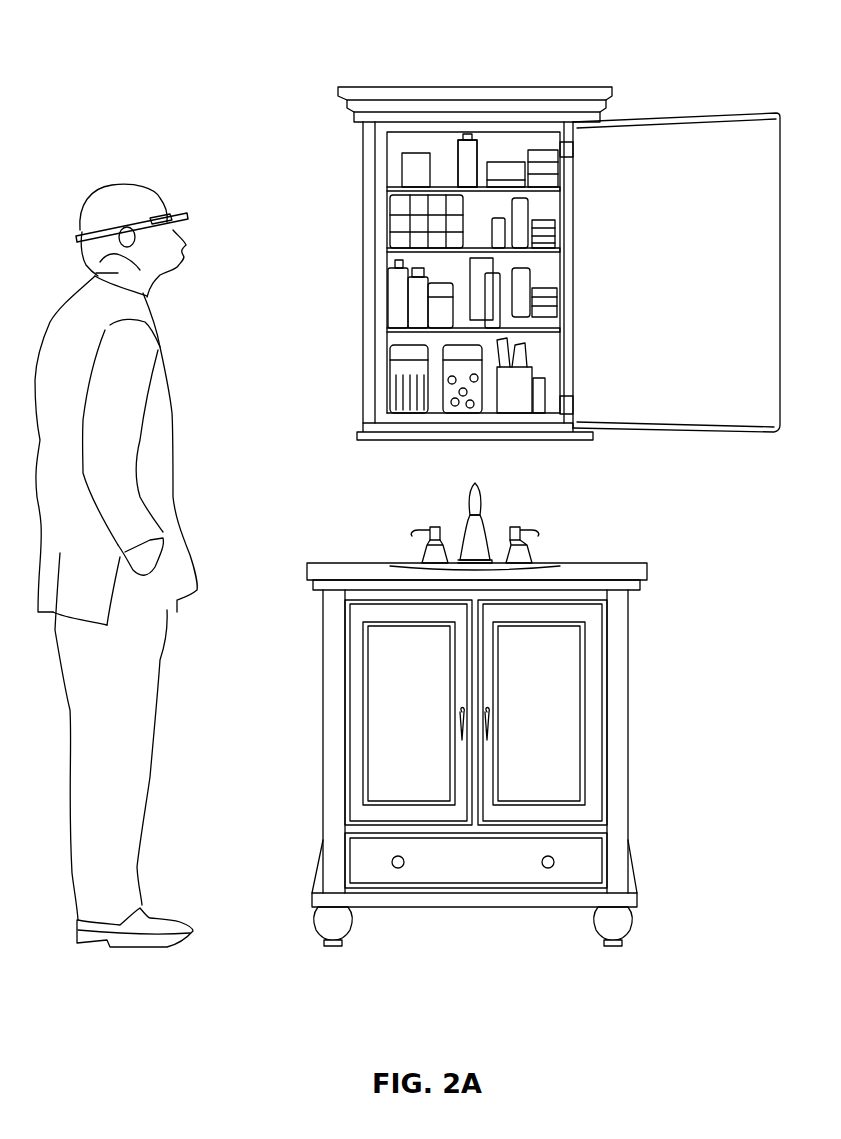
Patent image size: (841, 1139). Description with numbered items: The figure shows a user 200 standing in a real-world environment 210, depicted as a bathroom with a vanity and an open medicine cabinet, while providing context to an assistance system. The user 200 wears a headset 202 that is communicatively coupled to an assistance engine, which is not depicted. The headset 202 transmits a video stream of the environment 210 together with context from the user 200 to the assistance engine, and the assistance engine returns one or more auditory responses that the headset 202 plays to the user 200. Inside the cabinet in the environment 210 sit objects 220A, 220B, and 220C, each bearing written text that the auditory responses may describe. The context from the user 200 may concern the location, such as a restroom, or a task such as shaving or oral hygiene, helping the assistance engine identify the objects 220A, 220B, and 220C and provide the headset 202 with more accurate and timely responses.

The user 200 is at (168, 468).
The headset 202 is at (76, 237).
The real-world environment 210 is at (265, 146).
The object 220A is at (462, 157).
The object 220B is at (417, 293).
The object 220C is at (400, 315).